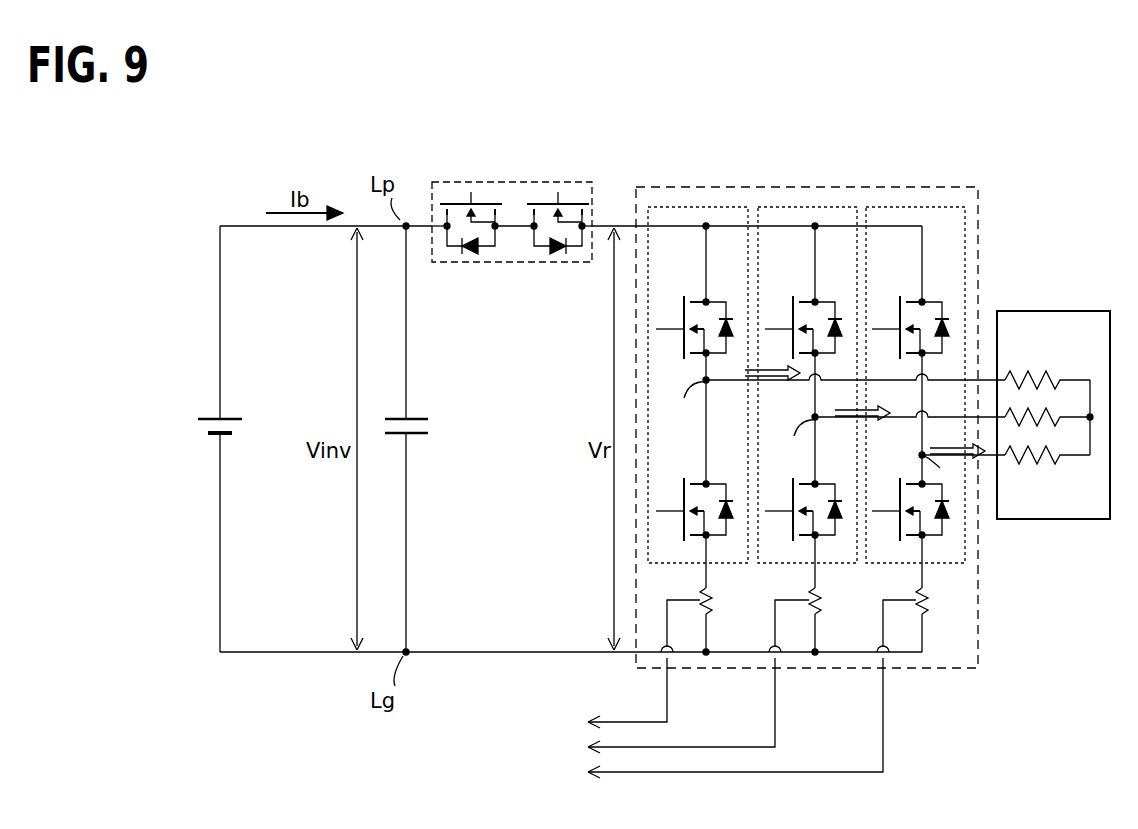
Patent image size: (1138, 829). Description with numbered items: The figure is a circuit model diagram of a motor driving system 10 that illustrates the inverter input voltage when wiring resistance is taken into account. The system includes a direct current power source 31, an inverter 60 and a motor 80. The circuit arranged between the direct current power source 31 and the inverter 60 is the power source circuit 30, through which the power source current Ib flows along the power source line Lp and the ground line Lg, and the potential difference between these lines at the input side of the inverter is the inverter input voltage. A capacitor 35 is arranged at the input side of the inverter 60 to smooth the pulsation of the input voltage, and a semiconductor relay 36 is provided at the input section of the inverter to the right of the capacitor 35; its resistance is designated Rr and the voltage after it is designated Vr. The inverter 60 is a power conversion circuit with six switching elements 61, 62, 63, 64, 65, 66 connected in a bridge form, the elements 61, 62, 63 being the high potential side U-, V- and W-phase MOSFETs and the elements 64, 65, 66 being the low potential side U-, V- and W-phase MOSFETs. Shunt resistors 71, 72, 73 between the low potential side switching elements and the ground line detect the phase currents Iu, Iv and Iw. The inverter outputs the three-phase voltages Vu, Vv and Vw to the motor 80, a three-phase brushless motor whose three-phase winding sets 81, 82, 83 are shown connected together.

The motor driving system 10 is at (985, 166).
The power source circuit 30 is at (255, 439).
The direct current power source 31 is at (222, 419).
The capacitor 35 is at (412, 418).
The semiconductor relay 36 is at (512, 182).
The inverter 60 is at (978, 212).
The switching element 61 is at (710, 300).
The switching element 62 is at (820, 300).
The switching element 63 is at (916, 300).
The switching element 64 is at (710, 482).
The switching element 65 is at (820, 482).
The switching element 66 is at (912, 482).
The shunt resistor 71 is at (713, 598).
The shunt resistor 72 is at (822, 598).
The shunt resistor 73 is at (929, 598).
The motor 80 is at (1053, 385).
The winding set 81 is at (1020, 378).
The winding set 82 is at (1070, 414).
The winding set 83 is at (1062, 464).